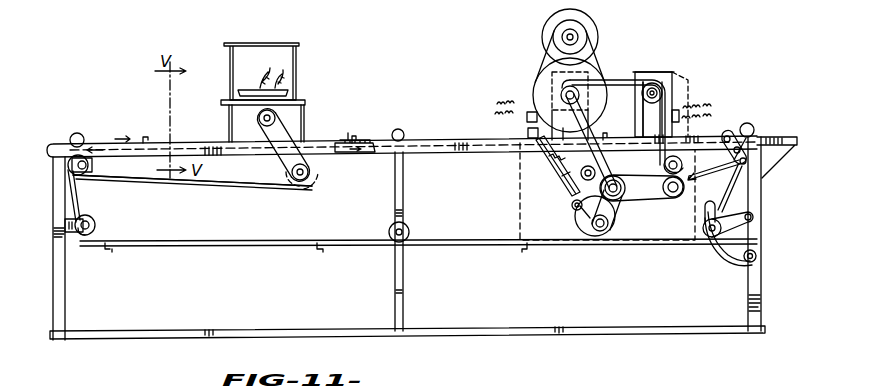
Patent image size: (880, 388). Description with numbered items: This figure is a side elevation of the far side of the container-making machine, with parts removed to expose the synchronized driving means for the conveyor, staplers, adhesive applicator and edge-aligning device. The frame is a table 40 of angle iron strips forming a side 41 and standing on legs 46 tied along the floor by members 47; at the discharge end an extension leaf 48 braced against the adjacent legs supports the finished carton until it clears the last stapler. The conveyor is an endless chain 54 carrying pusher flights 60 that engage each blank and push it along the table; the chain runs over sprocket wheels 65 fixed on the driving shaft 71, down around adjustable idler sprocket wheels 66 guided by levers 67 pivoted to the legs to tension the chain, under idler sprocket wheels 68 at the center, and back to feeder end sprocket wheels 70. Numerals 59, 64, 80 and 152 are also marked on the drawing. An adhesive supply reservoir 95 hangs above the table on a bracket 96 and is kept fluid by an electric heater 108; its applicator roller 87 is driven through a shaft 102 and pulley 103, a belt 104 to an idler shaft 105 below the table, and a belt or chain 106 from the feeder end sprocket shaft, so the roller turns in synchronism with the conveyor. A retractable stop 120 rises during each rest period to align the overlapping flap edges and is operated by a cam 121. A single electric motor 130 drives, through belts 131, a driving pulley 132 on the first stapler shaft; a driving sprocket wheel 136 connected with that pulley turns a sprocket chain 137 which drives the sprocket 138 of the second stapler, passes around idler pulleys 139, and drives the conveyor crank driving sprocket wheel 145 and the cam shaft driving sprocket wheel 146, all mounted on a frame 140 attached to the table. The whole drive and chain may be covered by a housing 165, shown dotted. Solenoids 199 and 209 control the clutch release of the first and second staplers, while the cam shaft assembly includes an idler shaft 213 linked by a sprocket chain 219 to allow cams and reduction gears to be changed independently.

The table 40 is at (43, 215).
The side 41 is at (436, 160).
The legs 46 is at (52, 287).
The members 47 is at (178, 318).
The extension leaf 48 is at (799, 125).
The endless chain 54 is at (218, 250).
The guide balls 59 is at (83, 135).
The pusher flights 60 is at (150, 126).
The lower pulley 64 is at (97, 224).
The sprocket wheels 65 is at (724, 165).
The adjustable idler sprocket wheels 66 is at (702, 227).
The levers 67 is at (730, 205).
The idler sprocket wheels 68 is at (409, 232).
The feeder end sprocket wheels 70 is at (94, 165).
The driving shaft 71 is at (750, 135).
The roller 80 is at (52, 143).
The applicator roller 87 is at (300, 101).
The adhesive supply reservoir 95 is at (240, 57).
The bracket 96 is at (304, 118).
The shaft 102 is at (258, 116).
The pulley 103 is at (261, 124).
The belt 104 is at (296, 135).
The idler shaft 105 is at (305, 175).
The belt or chain 106 is at (233, 184).
The electric heater 108 is at (240, 92).
The retractable stop 120 is at (527, 133).
The cam 121 is at (577, 221).
The electric motor 130 is at (604, 20).
The belts 131 is at (557, 33).
The driving pulley 132 is at (558, 63).
The driving sprocket wheel 136 is at (562, 88).
The sprocket chain 137 is at (620, 78).
The sprocket 138 is at (673, 80).
The idler pulleys 139 is at (595, 173).
The frame 140 is at (646, 118).
The conveyor crank driving sprocket wheel 145 is at (666, 197).
The cam shaft driving sprocket wheel 146 is at (610, 147).
The kernels 152 is at (625, 111).
The housing 165 is at (612, 52).
The solenoid 199 is at (522, 110).
The solenoid 209 is at (678, 115).
The idler shaft 213 is at (609, 227).
The sprocket chain 219 is at (556, 173).